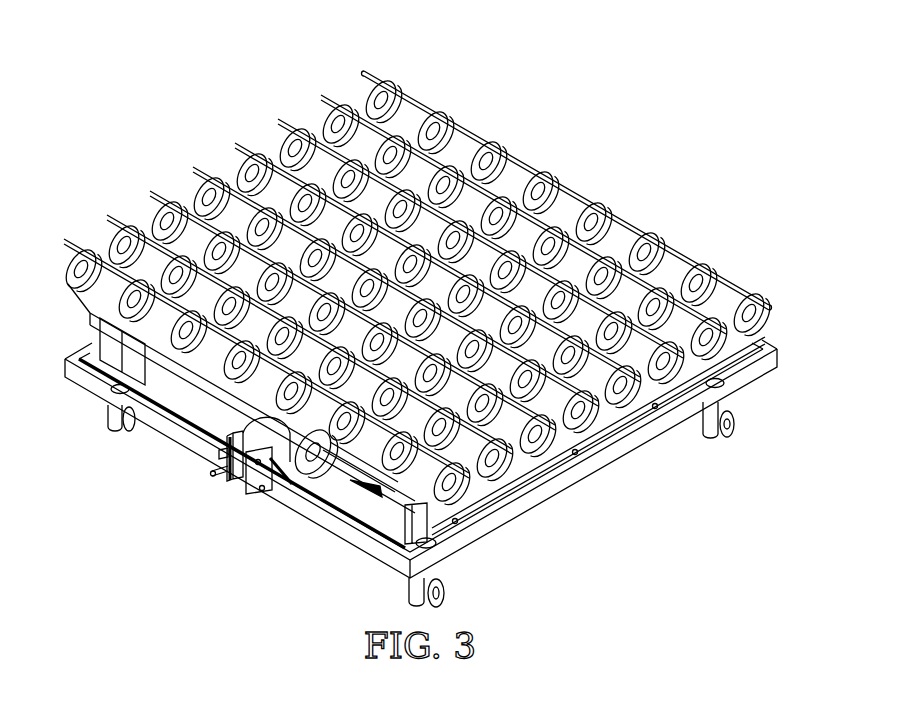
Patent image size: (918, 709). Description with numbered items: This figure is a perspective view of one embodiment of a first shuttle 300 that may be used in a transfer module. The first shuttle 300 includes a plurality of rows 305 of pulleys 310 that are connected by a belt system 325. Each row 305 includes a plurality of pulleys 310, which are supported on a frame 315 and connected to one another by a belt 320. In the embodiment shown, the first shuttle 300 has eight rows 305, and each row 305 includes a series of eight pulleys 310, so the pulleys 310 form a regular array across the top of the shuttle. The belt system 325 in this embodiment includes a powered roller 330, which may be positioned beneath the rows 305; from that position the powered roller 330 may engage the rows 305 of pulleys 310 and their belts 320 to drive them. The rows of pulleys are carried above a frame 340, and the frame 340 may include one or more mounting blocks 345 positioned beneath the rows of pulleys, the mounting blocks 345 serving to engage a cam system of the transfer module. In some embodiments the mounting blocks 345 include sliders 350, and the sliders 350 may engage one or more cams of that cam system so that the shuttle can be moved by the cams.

The first shuttle 300 is at (153, 85).
The rows 305 is at (70, 243).
The pulleys 310 is at (535, 170).
The belt 320 is at (680, 250).
The frame 315 is at (158, 378).
The belt system 325 is at (218, 487).
The powered roller 330 is at (260, 438).
The frame 340 is at (595, 470).
The mounting blocks 345 is at (732, 408).
The sliders 350 is at (720, 443).